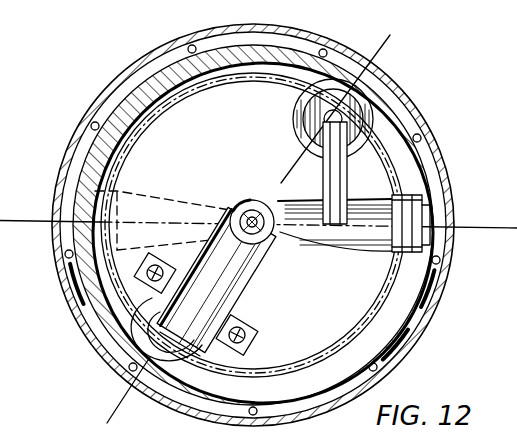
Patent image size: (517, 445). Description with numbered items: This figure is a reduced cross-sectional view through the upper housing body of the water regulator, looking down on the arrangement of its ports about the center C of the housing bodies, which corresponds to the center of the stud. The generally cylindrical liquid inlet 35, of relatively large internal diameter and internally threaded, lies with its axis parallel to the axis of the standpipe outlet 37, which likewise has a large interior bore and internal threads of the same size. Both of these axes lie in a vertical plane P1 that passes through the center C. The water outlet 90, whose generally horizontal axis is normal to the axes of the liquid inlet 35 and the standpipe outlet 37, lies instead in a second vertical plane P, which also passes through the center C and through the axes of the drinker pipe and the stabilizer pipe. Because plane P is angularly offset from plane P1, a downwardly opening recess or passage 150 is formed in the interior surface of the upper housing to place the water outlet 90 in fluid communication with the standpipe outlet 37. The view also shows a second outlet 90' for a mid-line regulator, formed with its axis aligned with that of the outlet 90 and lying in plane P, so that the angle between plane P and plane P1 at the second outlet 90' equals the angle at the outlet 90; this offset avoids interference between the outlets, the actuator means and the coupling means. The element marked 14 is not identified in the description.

The vertical plane P is at (30, 221).
The vertical plane P1 is at (393, 46).
The standpipe outlet 37 is at (296, 106).
The recess or passage 150 is at (337, 186).
The water outlet 90 is at (354, 242).
The second outlet 90' is at (162, 209).
The liquid inlet 35 is at (203, 352).
The center C is at (256, 199).
The housing 14 is at (513, 119).